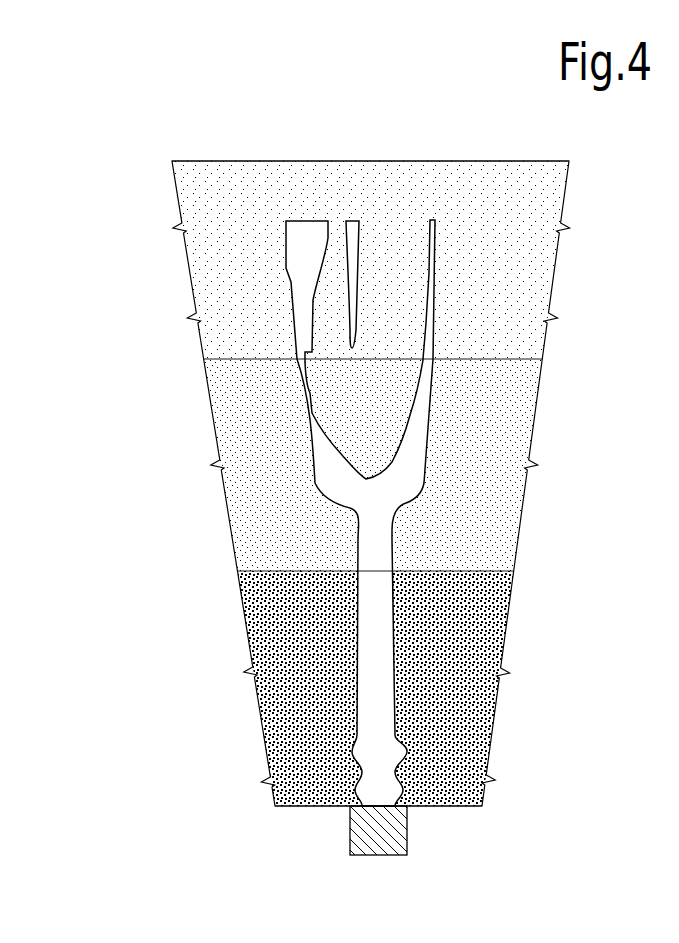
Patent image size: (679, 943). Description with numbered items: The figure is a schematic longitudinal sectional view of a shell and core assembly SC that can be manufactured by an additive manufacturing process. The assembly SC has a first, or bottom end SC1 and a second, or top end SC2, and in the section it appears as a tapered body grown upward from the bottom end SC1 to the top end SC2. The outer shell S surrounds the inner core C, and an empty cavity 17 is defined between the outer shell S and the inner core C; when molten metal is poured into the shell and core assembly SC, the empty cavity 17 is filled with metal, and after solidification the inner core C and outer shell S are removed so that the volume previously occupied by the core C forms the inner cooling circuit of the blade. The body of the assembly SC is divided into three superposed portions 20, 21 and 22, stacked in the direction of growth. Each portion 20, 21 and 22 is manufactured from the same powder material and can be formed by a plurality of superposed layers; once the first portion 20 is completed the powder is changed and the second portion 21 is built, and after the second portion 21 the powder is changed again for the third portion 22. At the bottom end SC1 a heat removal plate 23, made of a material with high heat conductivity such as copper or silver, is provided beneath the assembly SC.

The third portion 22 is at (100, 357).
The second portion 21 is at (100, 362).
The first portion 20 is at (100, 570).
The inner core C is at (392, 267).
The empty cavity 17 is at (330, 460).
The outer shell S is at (497, 412).
The shell and core assembly SC is at (541, 517).
The second or top end SC2 is at (267, 161).
The first or bottom end SC1 is at (442, 806).
The heat removal plate 23 is at (383, 845).